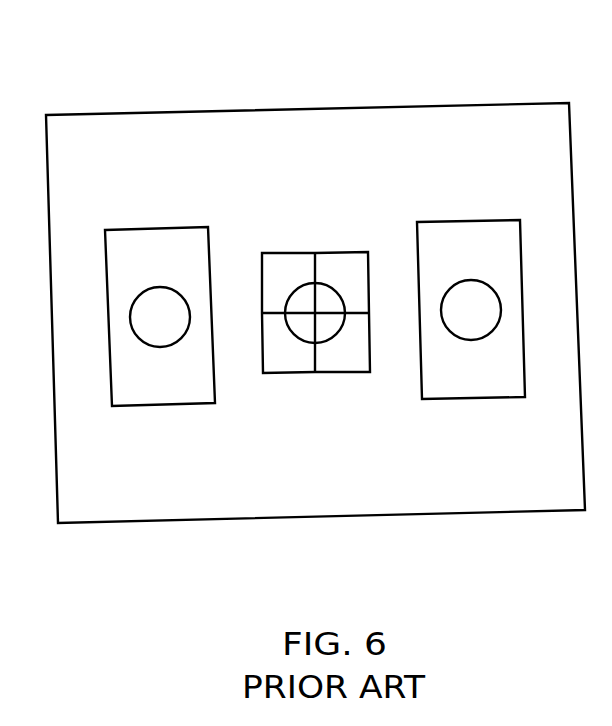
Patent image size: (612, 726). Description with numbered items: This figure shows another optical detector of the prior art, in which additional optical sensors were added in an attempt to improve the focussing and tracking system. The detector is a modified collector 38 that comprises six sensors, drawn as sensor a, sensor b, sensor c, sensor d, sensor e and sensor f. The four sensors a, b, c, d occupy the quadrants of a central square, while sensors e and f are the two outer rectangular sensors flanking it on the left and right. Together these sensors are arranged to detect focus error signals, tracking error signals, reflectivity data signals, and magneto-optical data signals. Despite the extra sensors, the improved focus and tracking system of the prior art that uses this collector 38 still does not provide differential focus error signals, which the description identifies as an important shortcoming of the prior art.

The modified collector 38 is at (85, 112).
The sensor a is at (283, 252).
The sensor b is at (349, 252).
The sensor c is at (352, 373).
The sensor d is at (285, 373).
The sensor e is at (155, 228).
The sensor f is at (468, 221).